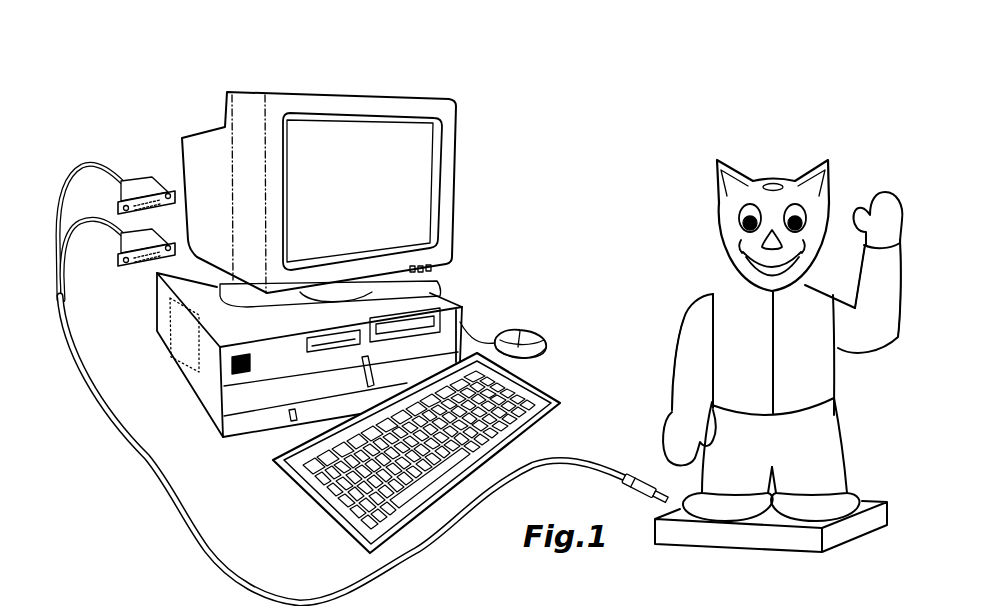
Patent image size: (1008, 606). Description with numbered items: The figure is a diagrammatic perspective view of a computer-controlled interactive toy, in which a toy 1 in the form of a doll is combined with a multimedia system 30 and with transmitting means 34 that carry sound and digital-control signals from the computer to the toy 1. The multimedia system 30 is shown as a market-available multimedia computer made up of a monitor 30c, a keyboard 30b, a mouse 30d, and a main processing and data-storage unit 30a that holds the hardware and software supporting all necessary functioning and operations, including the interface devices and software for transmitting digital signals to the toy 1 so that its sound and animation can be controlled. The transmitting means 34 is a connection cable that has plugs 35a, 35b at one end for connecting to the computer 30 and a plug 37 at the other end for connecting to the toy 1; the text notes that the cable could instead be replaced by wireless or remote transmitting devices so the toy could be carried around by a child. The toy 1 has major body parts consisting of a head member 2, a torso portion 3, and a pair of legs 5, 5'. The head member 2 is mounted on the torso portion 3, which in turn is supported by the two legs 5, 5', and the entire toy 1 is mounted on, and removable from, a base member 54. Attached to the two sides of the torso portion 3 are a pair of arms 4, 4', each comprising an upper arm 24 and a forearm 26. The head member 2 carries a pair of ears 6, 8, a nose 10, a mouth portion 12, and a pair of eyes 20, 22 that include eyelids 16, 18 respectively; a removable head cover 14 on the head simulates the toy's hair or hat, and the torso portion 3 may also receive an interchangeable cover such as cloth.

The toy figure 1 is at (698, 140).
The head member 2 is at (717, 225).
The torso portion 3 is at (812, 388).
The arm 4 is at (661, 352).
The arm 4' is at (866, 296).
The leg 5 is at (728, 493).
The leg 5' is at (835, 459).
The ear 6 is at (730, 163).
The ear 8 is at (808, 168).
The nose 10 is at (768, 243).
The mouth portion 12 is at (748, 265).
The removable head cover 14 is at (773, 182).
The eyelid 16 is at (745, 204).
The eyelid 18 is at (820, 207).
The eye 20 is at (746, 214).
The eye 22 is at (803, 217).
The upper arm 24 is at (690, 338).
The forearm 26 is at (690, 395).
The multimedia system 30 is at (514, 216).
The main processing and data-storage unit 30a is at (442, 297).
The keyboard 30b is at (307, 505).
The monitor 30c is at (262, 90).
The mouse 30d is at (528, 333).
The transmitting means 34 is at (233, 572).
The plug 35a is at (132, 266).
The plug 35b is at (153, 177).
The plug 37 is at (647, 477).
The base member 54 is at (847, 543).